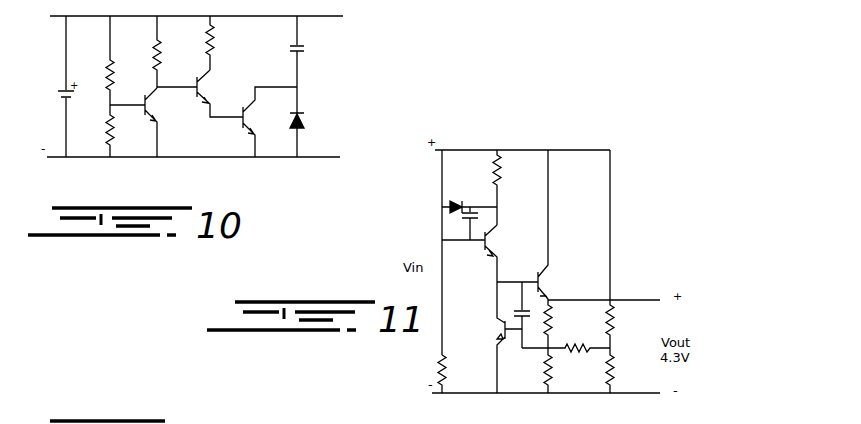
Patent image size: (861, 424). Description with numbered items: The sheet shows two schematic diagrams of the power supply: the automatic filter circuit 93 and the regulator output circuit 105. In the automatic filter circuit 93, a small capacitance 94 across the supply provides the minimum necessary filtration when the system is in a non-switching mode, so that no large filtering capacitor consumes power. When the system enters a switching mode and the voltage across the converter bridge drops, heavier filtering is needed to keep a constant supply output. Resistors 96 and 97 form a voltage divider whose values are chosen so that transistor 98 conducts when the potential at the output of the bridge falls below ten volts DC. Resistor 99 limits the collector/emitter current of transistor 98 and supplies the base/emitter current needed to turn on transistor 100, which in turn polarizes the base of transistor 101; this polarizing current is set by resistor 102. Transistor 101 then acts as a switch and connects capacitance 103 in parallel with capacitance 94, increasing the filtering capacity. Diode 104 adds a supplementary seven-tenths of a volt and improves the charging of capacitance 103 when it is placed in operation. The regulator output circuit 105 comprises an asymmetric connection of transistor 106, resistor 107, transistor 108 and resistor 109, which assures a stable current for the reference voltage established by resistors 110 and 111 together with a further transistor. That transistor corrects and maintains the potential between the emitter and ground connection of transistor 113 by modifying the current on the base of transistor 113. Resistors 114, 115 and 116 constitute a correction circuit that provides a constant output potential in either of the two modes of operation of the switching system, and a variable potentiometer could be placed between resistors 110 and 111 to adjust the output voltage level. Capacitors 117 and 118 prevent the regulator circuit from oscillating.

In FIG. 10, the automatic filter circuit 93 is at (312, 80).
In FIG. 10, the small capacitance 94 is at (65, 97).
In FIG. 10, the resistor 96 is at (108, 84).
In FIG. 10, the resistor 97 is at (107, 126).
In FIG. 10, the transistor 98 is at (154, 140).
In FIG. 10, the resistor 99 is at (154, 69).
In FIG. 10, the transistor 100 is at (202, 104).
In FIG. 10, the transistor 101 is at (243, 140).
In FIG. 10, the resistor 102 is at (232, 46).
In FIG. 10, the capacitance 103 is at (322, 61).
In FIG. 10, the diode 104 is at (306, 112).
In FIG. 11, the regulator output circuit 105 is at (616, 230).
In FIG. 11, the transistor 106 is at (446, 206).
In FIG. 11, the resistor 107 is at (472, 366).
In FIG. 11, the transistor 108 is at (495, 240).
In FIG. 11, the resistor 109 is at (523, 181).
In FIG. 11, the resistor 110 is at (575, 327).
In FIG. 11, the resistor 111 is at (544, 375).
In FIG. 11, the transistor 113 is at (548, 284).
In FIG. 11, the resistor 114 is at (584, 354).
In FIG. 11, the resistor 115 is at (615, 325).
In FIG. 11, the resistor 116 is at (615, 375).
In FIG. 11, the capacitor 117 is at (476, 208).
In FIG. 11, the capacitor 118 is at (520, 308).